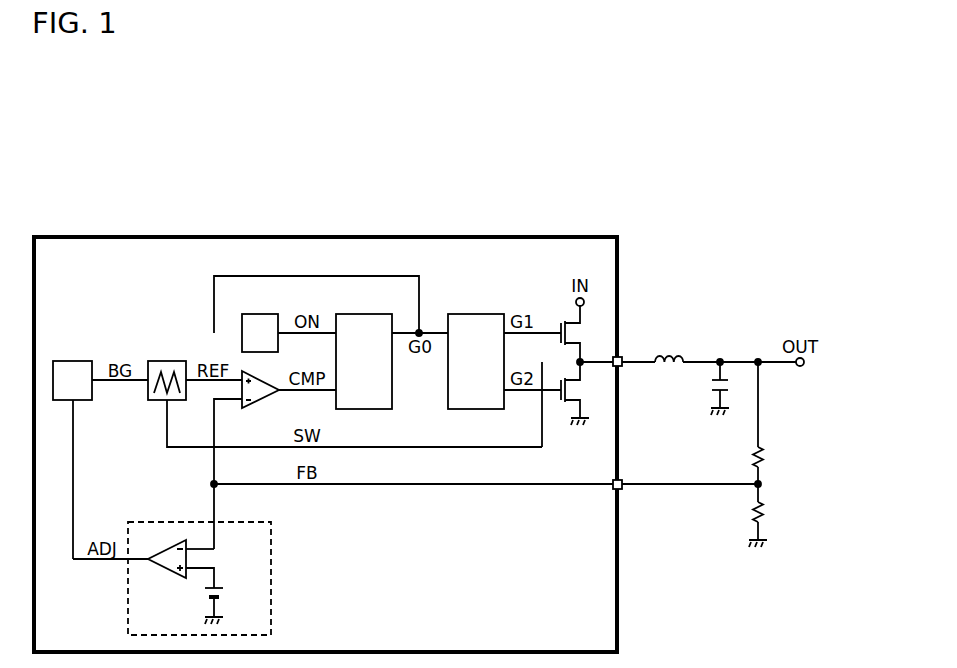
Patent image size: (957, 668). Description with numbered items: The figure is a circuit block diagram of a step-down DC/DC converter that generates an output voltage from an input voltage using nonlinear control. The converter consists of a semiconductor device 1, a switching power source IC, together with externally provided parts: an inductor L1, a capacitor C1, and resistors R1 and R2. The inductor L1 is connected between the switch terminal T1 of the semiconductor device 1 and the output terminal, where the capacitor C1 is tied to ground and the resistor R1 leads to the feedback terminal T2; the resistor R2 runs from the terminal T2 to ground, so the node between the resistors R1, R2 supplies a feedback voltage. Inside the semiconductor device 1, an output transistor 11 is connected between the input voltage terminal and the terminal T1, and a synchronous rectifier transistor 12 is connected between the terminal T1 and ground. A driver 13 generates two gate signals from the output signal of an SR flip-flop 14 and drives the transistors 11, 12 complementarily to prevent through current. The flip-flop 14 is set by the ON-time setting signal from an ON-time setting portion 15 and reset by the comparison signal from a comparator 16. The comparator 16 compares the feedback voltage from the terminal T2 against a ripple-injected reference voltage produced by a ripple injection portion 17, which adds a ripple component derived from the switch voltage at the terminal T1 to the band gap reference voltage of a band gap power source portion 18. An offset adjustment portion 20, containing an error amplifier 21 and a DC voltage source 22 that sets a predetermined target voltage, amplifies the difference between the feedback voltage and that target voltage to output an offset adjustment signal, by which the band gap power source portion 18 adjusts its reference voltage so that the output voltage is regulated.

The semiconductor device 1 is at (328, 237).
The transistor 11 is at (590, 334).
The transistor 12 is at (590, 393).
The driver 13 is at (476, 314).
The SR flip-flop 14 is at (364, 314).
The ON-time setting portion 15 is at (259, 314).
The comparator 16 is at (257, 402).
The ripple injection portion 17 is at (166, 361).
The band gap power source portion 18 is at (72, 361).
The offset adjustment portion 20 is at (166, 521).
The error amplifier 21 is at (165, 580).
The DC voltage source 22 is at (233, 604).
The external terminal T1 is at (622, 367).
The external terminal T2 is at (622, 489).
The inductor L1 is at (668, 351).
The capacitor C1 is at (703, 388).
The resistor R1 is at (777, 458).
The resistor R2 is at (777, 513).